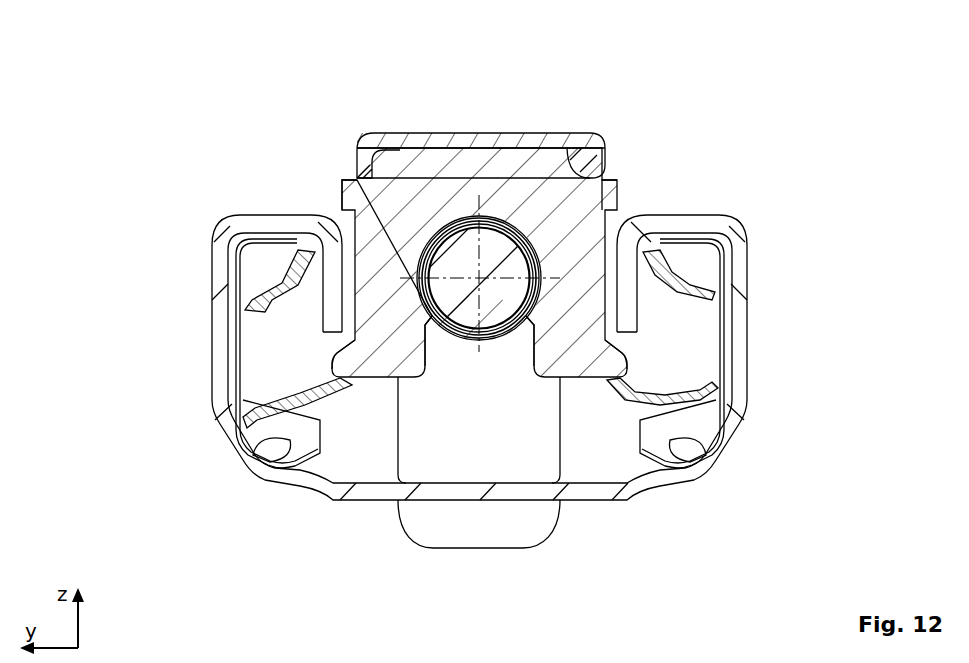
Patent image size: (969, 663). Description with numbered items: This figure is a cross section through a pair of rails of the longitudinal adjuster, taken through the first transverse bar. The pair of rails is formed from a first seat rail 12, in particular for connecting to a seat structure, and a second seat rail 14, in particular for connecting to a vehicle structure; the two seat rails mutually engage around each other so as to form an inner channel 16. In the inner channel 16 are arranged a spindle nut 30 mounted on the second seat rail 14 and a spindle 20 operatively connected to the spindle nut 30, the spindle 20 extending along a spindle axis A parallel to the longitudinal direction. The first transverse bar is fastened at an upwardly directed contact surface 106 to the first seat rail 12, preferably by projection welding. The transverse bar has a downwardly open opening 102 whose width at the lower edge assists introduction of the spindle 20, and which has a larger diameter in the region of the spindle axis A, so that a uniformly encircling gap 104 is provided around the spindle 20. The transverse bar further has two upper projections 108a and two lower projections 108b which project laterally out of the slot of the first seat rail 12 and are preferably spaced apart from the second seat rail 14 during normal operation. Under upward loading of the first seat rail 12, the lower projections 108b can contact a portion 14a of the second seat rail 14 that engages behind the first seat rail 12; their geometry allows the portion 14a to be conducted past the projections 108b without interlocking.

The first seat rail 12 is at (550, 135).
The second seat rail 14 is at (445, 490).
The portion of the second seat rail 14a is at (333, 322).
The inner channel 16 is at (610, 457).
The spindle 20 is at (452, 248).
The spindle nut 30 is at (480, 452).
The opening 102 is at (512, 238).
The gap 104 is at (465, 222).
The contact surface 106 is at (465, 135).
The upper projections 108a is at (352, 200).
The lower projections 108b is at (345, 360).
The spindle axis A is at (482, 272).